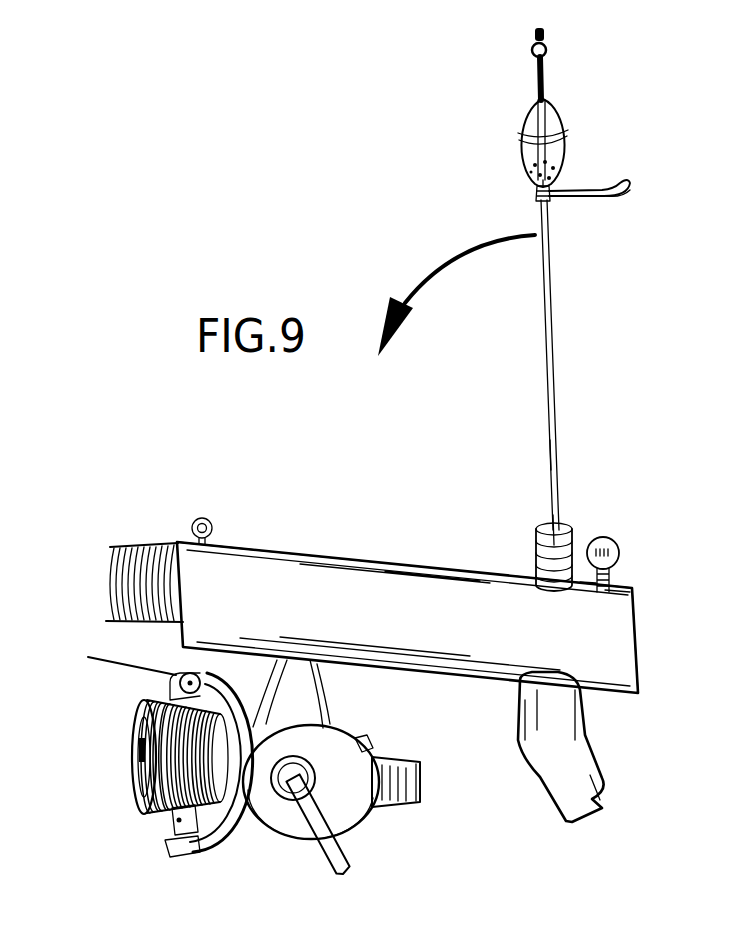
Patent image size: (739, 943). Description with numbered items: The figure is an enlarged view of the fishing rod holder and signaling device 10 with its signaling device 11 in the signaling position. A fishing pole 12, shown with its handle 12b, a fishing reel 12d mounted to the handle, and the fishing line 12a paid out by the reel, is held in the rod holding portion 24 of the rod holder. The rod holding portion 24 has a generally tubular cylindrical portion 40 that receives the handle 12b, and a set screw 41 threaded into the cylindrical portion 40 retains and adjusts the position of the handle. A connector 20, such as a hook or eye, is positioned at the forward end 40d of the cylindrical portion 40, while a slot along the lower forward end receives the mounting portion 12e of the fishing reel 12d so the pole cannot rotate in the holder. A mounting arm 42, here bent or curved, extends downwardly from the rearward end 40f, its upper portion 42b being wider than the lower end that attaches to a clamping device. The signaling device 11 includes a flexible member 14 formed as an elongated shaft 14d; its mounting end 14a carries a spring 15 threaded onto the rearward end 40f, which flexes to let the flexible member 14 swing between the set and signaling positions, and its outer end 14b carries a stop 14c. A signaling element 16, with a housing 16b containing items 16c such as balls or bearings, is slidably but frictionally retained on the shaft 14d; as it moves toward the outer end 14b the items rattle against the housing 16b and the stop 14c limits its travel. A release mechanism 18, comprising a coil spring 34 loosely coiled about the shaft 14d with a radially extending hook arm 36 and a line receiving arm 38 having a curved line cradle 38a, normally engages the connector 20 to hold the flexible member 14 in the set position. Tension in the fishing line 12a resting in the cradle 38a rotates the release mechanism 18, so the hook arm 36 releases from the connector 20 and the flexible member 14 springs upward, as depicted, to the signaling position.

The fishing rod holder and signaling device 10 is at (235, 239).
The signaling device 11 is at (672, 104).
The fishing pole 12 is at (727, 573).
The fishing line 12a is at (117, 665).
The handle 12b is at (137, 548).
The fishing reel 12d is at (352, 808).
The mounting portion of fishing reel 12e is at (303, 675).
The flexible member 14 is at (585, 316).
The mounting end 14a is at (548, 527).
The outer end 14b is at (533, 38).
The stop 14c is at (548, 47).
The elongated shaft 14d is at (558, 455).
The spring 15 is at (578, 535).
The signaling element 16 is at (590, 108).
The housing 16b is at (516, 133).
The items 16c is at (575, 155).
The release mechanism 18 is at (588, 222).
The connector 20 is at (197, 517).
The rod holding portion 24 is at (418, 552).
The coil spring 34 is at (538, 202).
The hook arm 36 is at (534, 194).
The line receiving arm 38 is at (604, 185).
The line cradle 38a is at (627, 200).
The cylindrical portion 40 is at (279, 578).
The forward end 40d is at (250, 546).
The rearward end 40f is at (613, 607).
The set screw 41 is at (615, 540).
The mounting arm 42 is at (575, 758).
The upper portion of mounting arm 42b is at (537, 715).